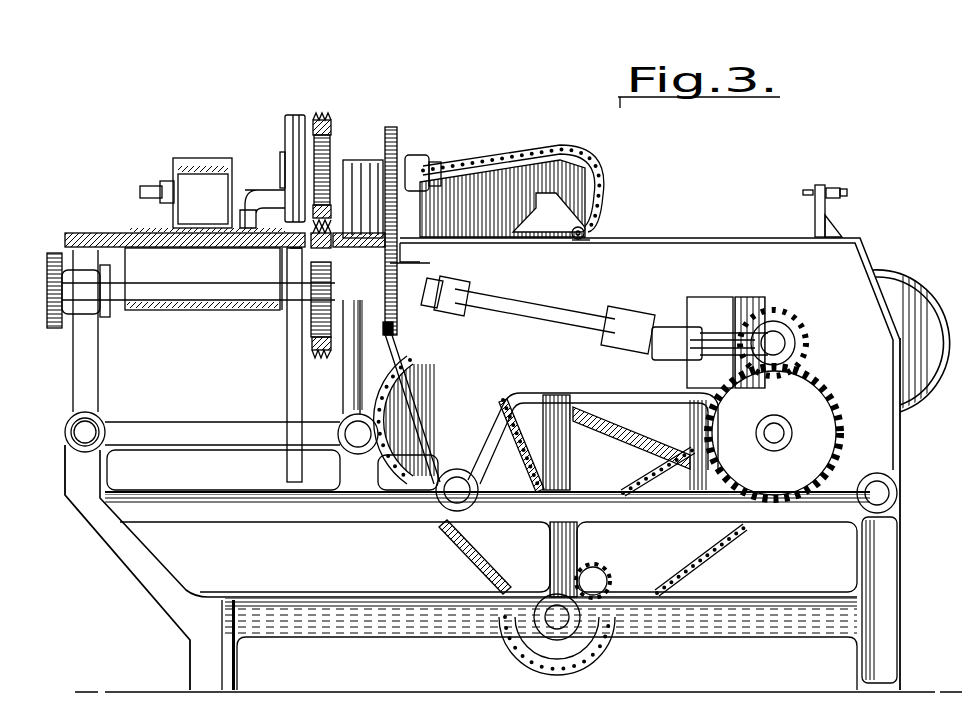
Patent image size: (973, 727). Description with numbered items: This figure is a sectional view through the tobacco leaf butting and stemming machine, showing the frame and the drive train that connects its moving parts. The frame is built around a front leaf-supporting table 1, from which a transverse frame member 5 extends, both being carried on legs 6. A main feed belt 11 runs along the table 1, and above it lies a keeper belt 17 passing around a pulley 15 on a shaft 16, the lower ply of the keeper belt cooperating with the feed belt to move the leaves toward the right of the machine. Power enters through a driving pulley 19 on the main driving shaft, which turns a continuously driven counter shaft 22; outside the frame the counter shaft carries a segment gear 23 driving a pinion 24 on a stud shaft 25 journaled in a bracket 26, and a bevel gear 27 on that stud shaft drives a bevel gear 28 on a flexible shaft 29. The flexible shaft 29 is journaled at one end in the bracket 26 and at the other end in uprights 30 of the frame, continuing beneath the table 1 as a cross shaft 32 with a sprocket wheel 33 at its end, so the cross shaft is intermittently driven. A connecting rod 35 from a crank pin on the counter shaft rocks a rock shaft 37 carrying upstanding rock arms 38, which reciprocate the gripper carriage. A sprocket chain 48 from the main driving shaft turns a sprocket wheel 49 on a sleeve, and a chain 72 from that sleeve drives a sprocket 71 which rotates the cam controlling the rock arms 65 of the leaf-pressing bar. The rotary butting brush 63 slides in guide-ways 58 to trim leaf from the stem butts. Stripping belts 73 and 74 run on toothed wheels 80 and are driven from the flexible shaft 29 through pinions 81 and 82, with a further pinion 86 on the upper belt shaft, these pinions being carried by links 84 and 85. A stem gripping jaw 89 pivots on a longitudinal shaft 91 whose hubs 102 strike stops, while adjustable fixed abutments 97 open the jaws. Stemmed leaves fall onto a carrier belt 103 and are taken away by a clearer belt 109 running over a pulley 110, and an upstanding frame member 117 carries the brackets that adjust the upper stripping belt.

The leaf-supporting table 1 is at (90, 233).
The transverse frame member 5 is at (686, 238).
The legs 6 is at (136, 574).
The main feed belt 11 is at (128, 233).
The pulley 15 is at (203, 199).
The shaft 16 is at (152, 193).
The keeper belt 17 is at (202, 162).
The driving pulley 19 is at (928, 298).
The counter shaft 22 is at (776, 428).
The segment gear 23 is at (818, 397).
The pinion 24 is at (791, 333).
The stud shaft 25 is at (790, 342).
The bracket 26 is at (710, 342).
The bevel gear 27 is at (774, 321).
The bevel gear 28 is at (750, 312).
The flexible shaft 29 is at (561, 318).
The uprights 30 is at (73, 384).
The cross shaft 32 is at (205, 288).
The sprocket wheel 33 is at (48, 262).
The connecting rod 35 is at (640, 440).
The rock shaft 37 is at (547, 618).
The rock arms 38 is at (570, 467).
The sprocket chain 48 is at (688, 573).
The sprocket wheel 49 is at (593, 576).
The guide-ways 58 is at (483, 187).
The butting brush 63 is at (435, 160).
The rock arms 65 is at (263, 193).
The sprocket 71 is at (494, 454).
The chain 72 is at (466, 552).
The stripping belt 73 is at (323, 113).
The stripping belt 74 is at (321, 354).
The toothed wheels 80 is at (323, 153).
The pinion 81 is at (394, 328).
The pinion 82 is at (410, 244).
The links 84 is at (413, 158).
The links 85 is at (423, 264).
The pinion 86 is at (388, 150).
The stem gripping jaw 89 is at (592, 202).
The longitudinal shaft 91 is at (580, 238).
The adjustable fixed abutments 97 is at (812, 190).
The hubs 102 is at (586, 233).
The stemmed leaf carrier belt 103 is at (288, 240).
The stemmed leaf clearer belt 109 is at (294, 116).
The pulley 110 is at (292, 139).
The upstanding frame member 117 is at (363, 167).